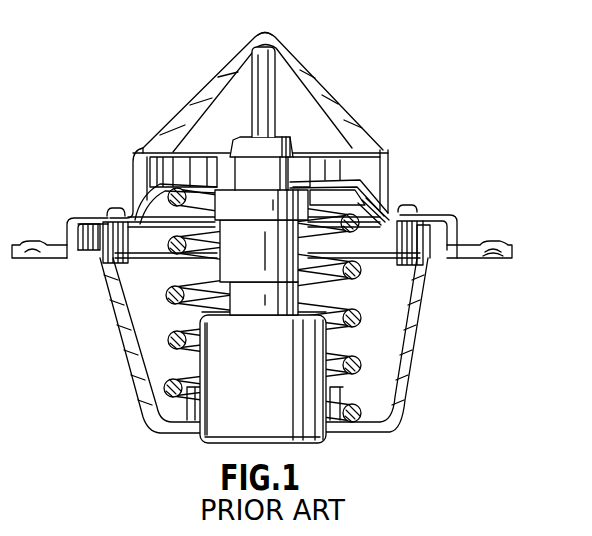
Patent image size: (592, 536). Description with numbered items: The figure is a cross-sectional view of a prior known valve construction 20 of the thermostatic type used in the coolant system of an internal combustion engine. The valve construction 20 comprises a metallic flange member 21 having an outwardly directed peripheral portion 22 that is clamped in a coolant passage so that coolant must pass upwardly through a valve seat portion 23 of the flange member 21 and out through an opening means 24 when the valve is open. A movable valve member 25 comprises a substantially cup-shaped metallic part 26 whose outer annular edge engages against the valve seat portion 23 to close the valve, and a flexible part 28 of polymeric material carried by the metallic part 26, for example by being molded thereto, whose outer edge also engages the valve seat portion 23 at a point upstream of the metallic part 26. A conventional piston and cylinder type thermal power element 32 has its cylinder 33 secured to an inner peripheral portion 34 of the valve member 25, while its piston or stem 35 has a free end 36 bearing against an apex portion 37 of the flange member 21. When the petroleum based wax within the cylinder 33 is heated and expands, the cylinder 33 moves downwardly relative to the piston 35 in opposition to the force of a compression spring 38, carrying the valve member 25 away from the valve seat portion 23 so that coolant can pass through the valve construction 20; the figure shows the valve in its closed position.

The valve construction 20 is at (387, 118).
The flange member 21 is at (455, 225).
The outwardly directed peripheral portion 22 is at (508, 246).
The valve seat portion 23 is at (390, 268).
The opening means 24 is at (297, 124).
The movable valve member 25 is at (365, 178).
The cup-shaped metallic part 26 is at (160, 188).
The flexible part 28 is at (400, 268).
The thermal power element 32 is at (202, 362).
The cylinder 33 is at (313, 377).
The inner peripheral portion 34 is at (227, 173).
The piston 35 is at (250, 107).
The free end 36 is at (262, 53).
The apex portion 37 is at (272, 28).
The compression spring 38 is at (167, 338).